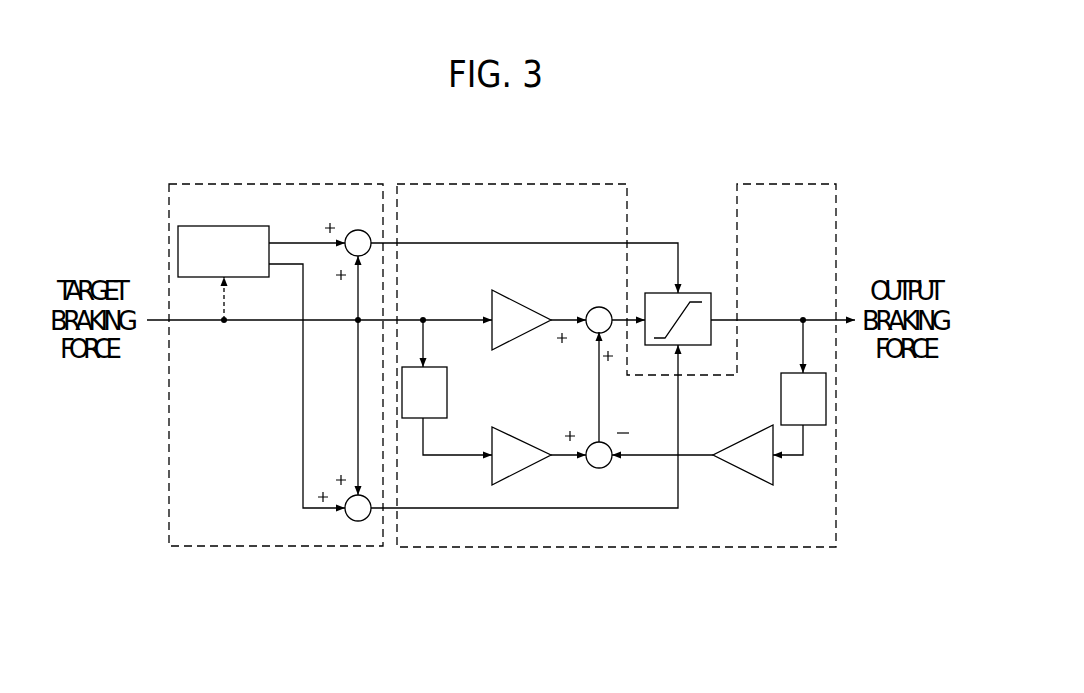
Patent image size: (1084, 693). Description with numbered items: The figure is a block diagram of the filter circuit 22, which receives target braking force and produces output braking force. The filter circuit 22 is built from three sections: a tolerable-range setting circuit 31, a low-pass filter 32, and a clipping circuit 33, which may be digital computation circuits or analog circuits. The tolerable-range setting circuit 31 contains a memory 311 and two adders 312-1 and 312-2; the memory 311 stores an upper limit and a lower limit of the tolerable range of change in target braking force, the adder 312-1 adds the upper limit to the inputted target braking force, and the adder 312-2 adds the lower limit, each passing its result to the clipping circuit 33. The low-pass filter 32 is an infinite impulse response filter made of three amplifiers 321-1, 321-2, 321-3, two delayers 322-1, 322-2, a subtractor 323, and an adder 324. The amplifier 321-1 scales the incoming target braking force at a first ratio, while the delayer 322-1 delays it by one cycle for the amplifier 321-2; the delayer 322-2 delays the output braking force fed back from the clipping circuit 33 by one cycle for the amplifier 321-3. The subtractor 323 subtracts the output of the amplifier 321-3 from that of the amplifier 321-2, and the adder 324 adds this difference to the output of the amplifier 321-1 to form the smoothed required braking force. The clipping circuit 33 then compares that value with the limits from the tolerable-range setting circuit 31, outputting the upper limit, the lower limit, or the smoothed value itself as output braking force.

The filter circuit 22 is at (673, 576).
The tolerable-range setting circuit 31 is at (283, 548).
The low-pass filter 32 is at (567, 548).
The clipping circuit 33 is at (704, 293).
The memory 311 is at (247, 226).
The adder 312-1 is at (358, 230).
The adder 312-2 is at (352, 522).
The amplifier 321-1 is at (541, 276).
The amplifier 321-2 is at (491, 463).
The amplifier 321-3 is at (750, 478).
The delayer 322-1 is at (447, 395).
The delayer 322-2 is at (827, 410).
The subtractor 323 is at (603, 466).
The adder 324 is at (599, 306).